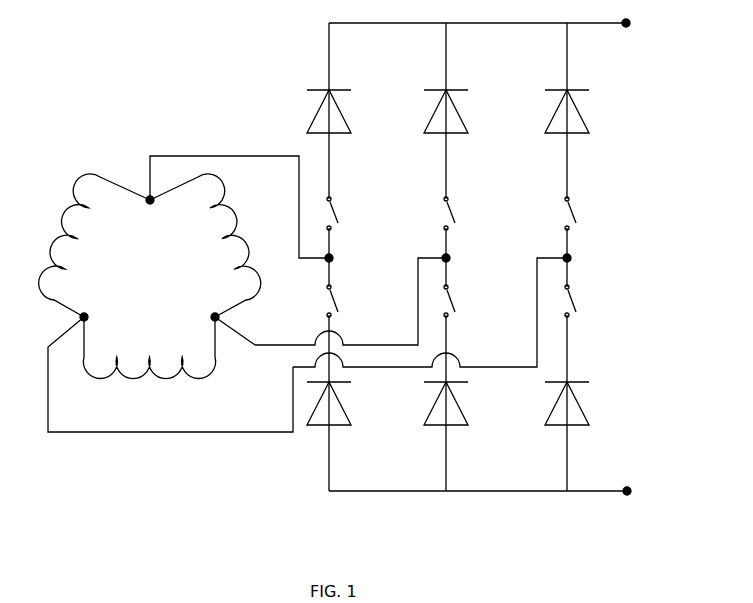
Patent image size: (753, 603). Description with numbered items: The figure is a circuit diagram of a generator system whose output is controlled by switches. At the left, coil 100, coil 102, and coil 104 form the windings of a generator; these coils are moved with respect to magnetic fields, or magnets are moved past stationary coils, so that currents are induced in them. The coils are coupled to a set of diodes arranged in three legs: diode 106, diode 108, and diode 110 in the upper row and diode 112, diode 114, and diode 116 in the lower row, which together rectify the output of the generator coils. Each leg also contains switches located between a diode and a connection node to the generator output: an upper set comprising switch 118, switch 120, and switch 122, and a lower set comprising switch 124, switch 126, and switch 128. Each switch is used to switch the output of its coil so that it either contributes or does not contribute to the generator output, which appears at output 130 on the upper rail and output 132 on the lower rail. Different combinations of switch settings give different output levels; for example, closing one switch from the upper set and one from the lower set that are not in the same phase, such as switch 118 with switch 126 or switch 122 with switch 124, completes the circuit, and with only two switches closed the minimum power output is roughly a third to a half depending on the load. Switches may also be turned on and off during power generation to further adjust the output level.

The coil 100 is at (134, 276).
The coil 102 is at (133, 372).
The coil 104 is at (242, 242).
The diode 106 is at (308, 121).
The diode 108 is at (433, 134).
The diode 110 is at (557, 134).
The diode 112 is at (323, 425).
The diode 114 is at (433, 422).
The diode 116 is at (556, 424).
The switch 118 is at (338, 223).
The switch 120 is at (455, 223).
The switch 122 is at (577, 213).
The switch 124 is at (338, 312).
The switch 126 is at (455, 312).
The switch 128 is at (578, 302).
The output 130 is at (630, 22).
The output 132 is at (631, 488).